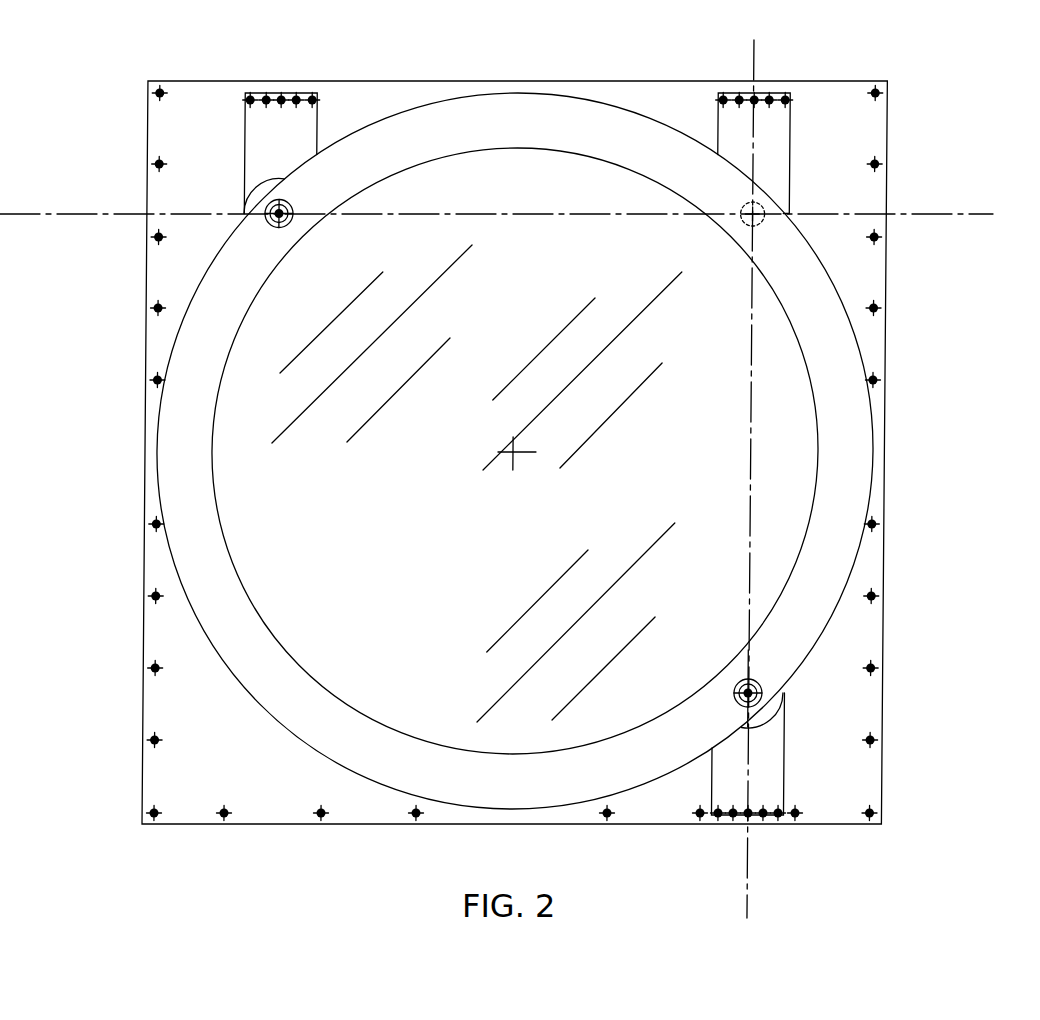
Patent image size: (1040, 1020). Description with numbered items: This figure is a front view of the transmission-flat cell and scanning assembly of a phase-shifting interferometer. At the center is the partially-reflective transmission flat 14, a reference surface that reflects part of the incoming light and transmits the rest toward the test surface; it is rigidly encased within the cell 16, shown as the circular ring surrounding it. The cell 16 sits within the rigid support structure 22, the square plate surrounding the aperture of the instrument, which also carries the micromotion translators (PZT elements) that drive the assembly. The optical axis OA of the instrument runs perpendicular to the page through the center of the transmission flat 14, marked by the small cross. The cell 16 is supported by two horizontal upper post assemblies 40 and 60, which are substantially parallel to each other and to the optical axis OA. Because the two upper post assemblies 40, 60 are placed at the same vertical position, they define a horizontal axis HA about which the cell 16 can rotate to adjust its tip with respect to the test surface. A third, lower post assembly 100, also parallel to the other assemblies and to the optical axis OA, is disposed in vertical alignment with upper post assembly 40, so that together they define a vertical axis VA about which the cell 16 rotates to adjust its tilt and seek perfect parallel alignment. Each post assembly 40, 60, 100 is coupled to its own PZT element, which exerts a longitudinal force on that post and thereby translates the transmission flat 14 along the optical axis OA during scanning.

The rigid support structure 22 is at (868, 122).
The cell 16 is at (852, 433).
The transmission flat 14 is at (435, 560).
The upper post assembly 60 is at (297, 205).
The upper post assembly 40 is at (744, 208).
The lower post assembly 100 is at (764, 682).
The optical axis OA is at (520, 452).
The horizontal axis HA is at (957, 215).
The vertical axis VA is at (754, 463).